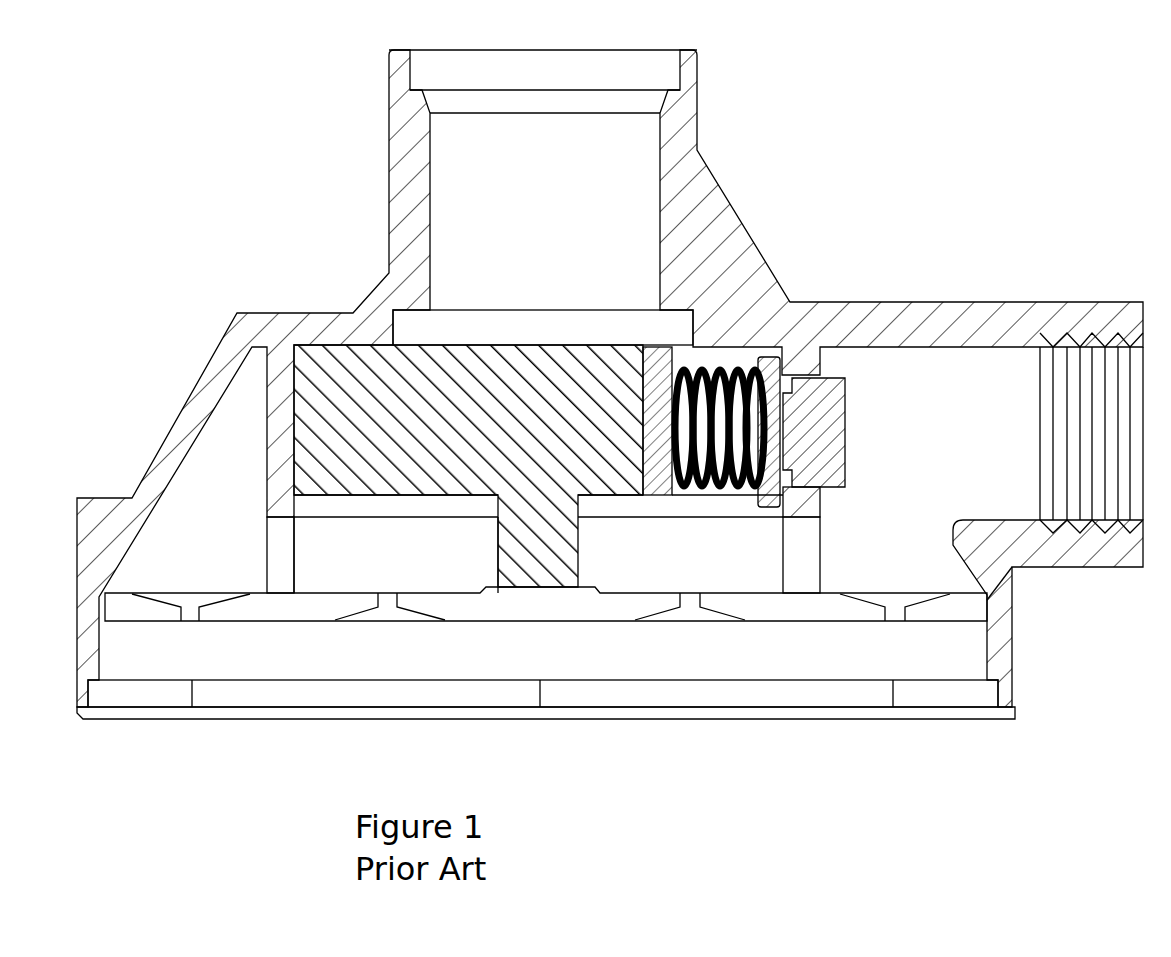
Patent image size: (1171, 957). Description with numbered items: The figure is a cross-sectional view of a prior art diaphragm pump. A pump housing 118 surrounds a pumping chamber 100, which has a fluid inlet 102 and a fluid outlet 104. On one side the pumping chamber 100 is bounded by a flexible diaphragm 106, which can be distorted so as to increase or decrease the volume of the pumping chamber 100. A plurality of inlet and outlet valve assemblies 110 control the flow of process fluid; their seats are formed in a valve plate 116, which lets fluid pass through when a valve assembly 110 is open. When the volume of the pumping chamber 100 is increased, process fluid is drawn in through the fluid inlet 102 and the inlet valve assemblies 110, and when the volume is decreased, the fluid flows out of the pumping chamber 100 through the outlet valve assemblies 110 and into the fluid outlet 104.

The pumping chamber 100 is at (571, 656).
The fluid inlet 102 is at (560, 212).
The fluid outlet 104 is at (926, 456).
The flexible diaphragm 106 is at (640, 722).
The inlet and outlet valve assemblies 110 is at (191, 600).
The valve plate 116 is at (272, 622).
The pump housing 118 is at (389, 202).